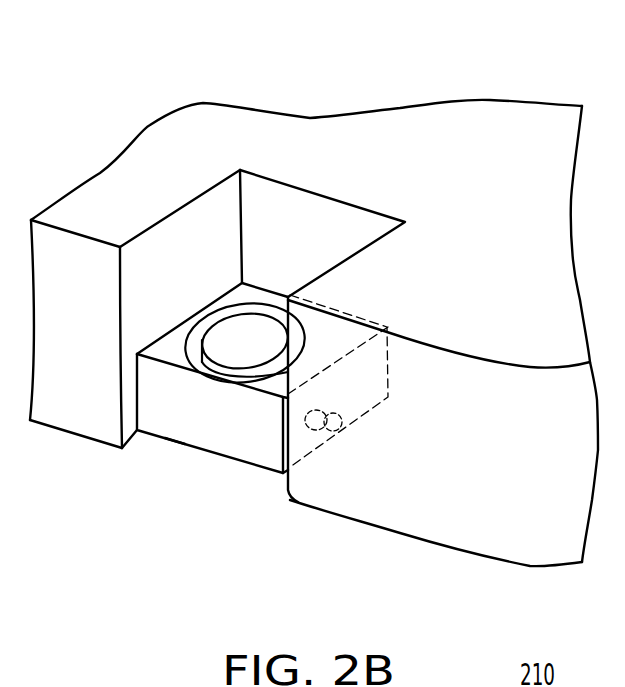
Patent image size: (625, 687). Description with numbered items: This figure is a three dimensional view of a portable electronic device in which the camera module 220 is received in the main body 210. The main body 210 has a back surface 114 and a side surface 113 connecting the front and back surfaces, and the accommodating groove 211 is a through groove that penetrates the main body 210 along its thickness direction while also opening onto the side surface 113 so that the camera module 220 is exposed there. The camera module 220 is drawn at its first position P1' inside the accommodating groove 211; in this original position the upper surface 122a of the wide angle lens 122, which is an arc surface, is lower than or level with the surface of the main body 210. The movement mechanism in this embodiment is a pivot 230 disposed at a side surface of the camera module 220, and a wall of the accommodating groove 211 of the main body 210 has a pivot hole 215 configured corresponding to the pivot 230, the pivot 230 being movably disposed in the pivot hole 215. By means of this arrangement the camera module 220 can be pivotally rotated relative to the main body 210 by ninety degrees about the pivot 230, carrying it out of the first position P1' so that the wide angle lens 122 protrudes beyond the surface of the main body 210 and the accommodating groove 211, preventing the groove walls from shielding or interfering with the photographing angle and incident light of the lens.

The main body 210 is at (519, 87).
The accommodating groove 211 is at (181, 243).
The back surface 114 is at (432, 185).
The side surface 113 is at (470, 468).
The camera module 220 is at (225, 467).
The wide angle lens 122 is at (275, 335).
The upper surface 122a is at (263, 343).
The pivot hole 215 is at (308, 433).
The pivot 230 is at (337, 433).
The first position P1' is at (162, 522).